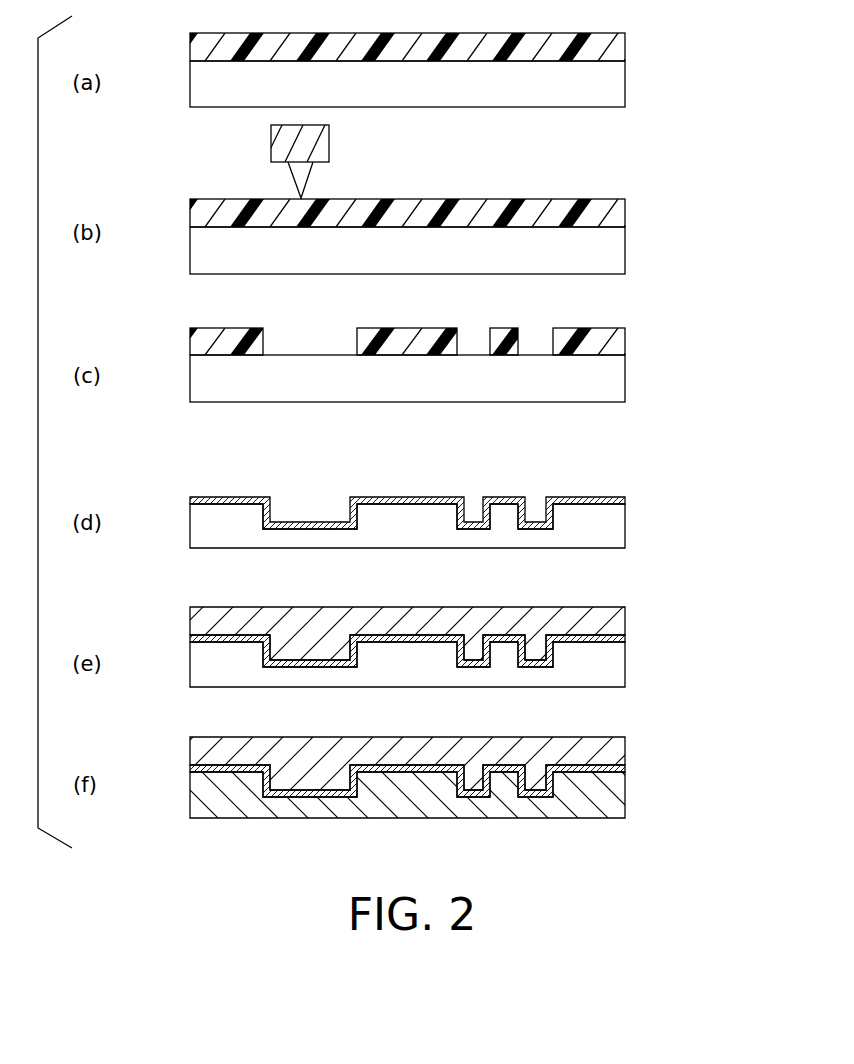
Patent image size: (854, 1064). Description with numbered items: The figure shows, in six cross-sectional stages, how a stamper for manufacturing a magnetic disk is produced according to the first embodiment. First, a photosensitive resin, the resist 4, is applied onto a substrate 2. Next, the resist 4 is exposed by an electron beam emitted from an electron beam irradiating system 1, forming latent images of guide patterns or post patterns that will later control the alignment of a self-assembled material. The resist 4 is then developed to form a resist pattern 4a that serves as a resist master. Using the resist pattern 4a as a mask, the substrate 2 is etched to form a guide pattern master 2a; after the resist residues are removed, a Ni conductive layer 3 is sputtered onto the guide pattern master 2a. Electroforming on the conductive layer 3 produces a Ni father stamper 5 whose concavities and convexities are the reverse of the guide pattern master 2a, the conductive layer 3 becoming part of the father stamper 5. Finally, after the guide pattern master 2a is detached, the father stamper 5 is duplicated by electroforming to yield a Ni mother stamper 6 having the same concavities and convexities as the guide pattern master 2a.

The electron beam irradiating system 1 is at (323, 152).
The substrate 2 is at (612, 83).
The guide pattern master 2a is at (614, 527).
The conductive layer 3 is at (625, 497).
The resist 4 is at (617, 40).
The resist pattern 4a is at (615, 342).
The father stamper 5 is at (628, 605).
The mother stamper 6 is at (620, 797).